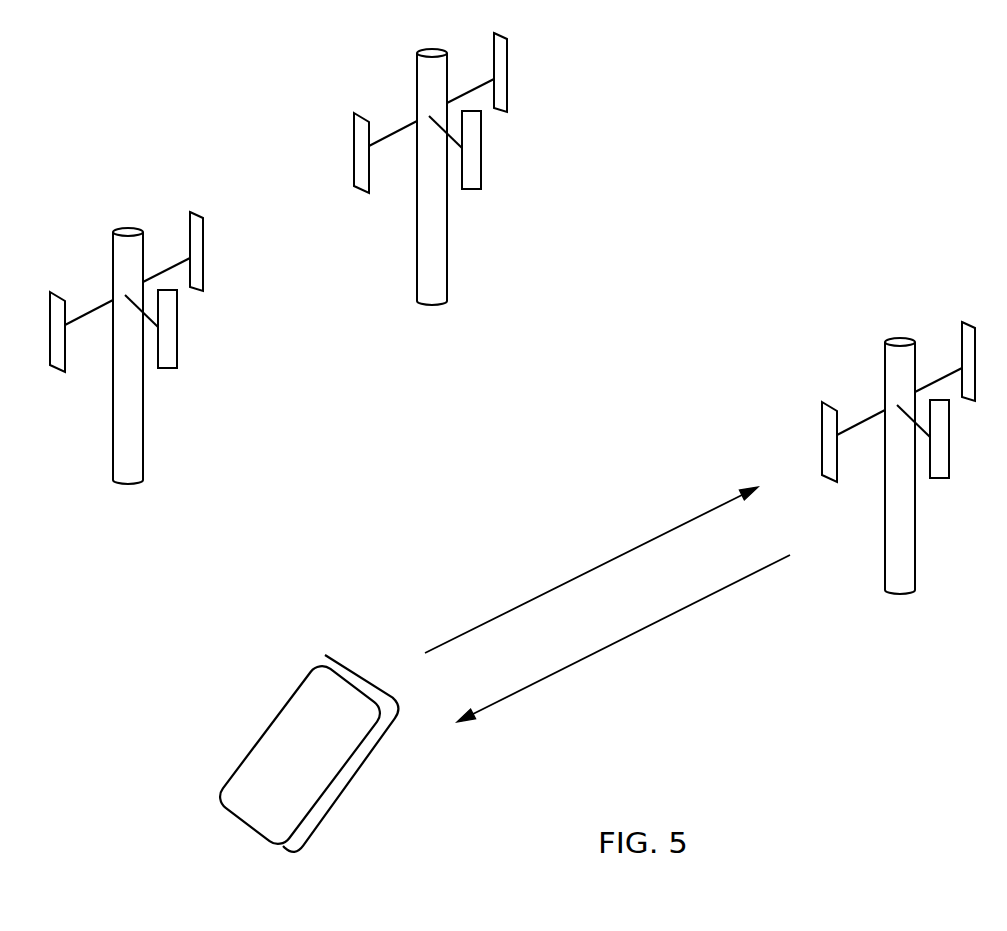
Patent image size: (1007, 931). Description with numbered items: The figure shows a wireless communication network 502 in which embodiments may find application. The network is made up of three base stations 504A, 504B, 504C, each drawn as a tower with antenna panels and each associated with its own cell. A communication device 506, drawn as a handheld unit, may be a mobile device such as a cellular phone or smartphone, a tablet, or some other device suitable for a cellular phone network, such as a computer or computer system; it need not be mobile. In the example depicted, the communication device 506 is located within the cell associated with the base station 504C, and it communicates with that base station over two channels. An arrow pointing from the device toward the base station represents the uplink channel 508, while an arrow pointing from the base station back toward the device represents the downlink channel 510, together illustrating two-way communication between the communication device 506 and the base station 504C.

The wireless communication network 502 is at (946, 101).
The base station 504A is at (125, 227).
The base station 504B is at (432, 48).
The base station 504C is at (898, 338).
The communication device 506 is at (296, 687).
The uplink channel 508 is at (583, 571).
The downlink channel 510 is at (603, 649).